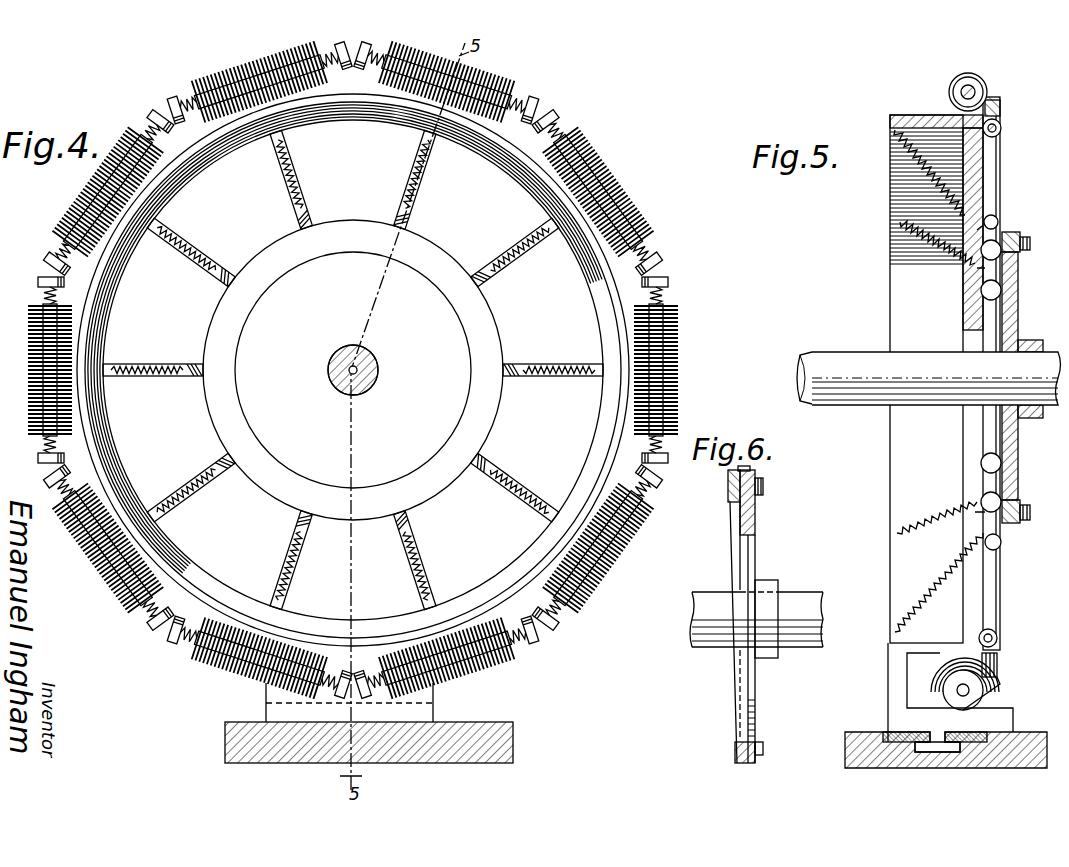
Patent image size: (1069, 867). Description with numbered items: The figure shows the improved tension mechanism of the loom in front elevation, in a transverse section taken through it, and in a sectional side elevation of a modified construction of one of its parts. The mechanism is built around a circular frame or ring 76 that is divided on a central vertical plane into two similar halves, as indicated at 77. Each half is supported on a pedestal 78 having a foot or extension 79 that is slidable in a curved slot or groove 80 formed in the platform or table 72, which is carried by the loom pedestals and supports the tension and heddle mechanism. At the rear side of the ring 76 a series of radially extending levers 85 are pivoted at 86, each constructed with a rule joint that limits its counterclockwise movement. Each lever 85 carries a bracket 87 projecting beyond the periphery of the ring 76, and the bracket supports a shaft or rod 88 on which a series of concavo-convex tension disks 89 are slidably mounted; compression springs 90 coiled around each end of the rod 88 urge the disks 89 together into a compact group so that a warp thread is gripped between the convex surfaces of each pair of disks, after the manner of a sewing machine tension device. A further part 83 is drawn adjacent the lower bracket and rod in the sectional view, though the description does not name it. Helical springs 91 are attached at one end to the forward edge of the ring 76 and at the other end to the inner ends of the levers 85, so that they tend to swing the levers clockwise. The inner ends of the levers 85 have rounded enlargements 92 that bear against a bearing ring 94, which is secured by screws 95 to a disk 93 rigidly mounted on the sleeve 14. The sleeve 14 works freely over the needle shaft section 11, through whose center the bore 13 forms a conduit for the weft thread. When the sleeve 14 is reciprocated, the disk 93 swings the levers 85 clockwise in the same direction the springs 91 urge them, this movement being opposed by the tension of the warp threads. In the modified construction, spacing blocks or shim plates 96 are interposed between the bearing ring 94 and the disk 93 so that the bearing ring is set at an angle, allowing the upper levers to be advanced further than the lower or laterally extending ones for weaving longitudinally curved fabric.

In FIG. 4, the needle shaft section 11 is at (374, 372).
In FIG. 5, the needle shaft section 11 is at (797, 367).
In FIG. 4, the bore 13 is at (336, 380).
In FIG. 4, the sleeve 14 is at (368, 356).
In FIG. 5, the sleeve 14 is at (842, 360).
In FIG. 6, the sleeve 14 is at (800, 601).
In FIG. 4, the platform 72 is at (433, 763).
In FIG. 5, the platform 72 is at (873, 766).
In FIG. 4, the circular frame or ring 76 is at (527, 172).
In FIG. 5, the circular frame or ring 76 is at (897, 275).
In FIG. 4, the division of ring sections 77 is at (353, 93).
In FIG. 4, the pedestal 78 is at (425, 693).
In FIG. 5, the pedestal 78 is at (890, 685).
In FIG. 5, the foot or extension 79 is at (940, 744).
In FIG. 5, the curved slot or groove 80 is at (927, 753).
In FIG. 5, the bracket 83 is at (960, 692).
In FIG. 4, the radially extending lever 85 is at (544, 238).
In FIG. 5, the radially extending lever 85 is at (998, 158).
In FIG. 5, the pivot 86 is at (1000, 127).
In FIG. 4, the bracket 87 is at (541, 106).
In FIG. 5, the bracket 87 is at (993, 98).
In FIG. 5, the shaft or rod 88 is at (953, 94).
In FIG. 4, the concavo-convex tension disks 89 is at (584, 178).
In FIG. 5, the concavo-convex tension disks 89 is at (970, 73).
In FIG. 4, the compression springs 90 is at (560, 133).
In FIG. 4, the helical springs 91 is at (491, 272).
In FIG. 5, the helical springs 91 is at (915, 212).
In FIG. 4, the rounded enlargements 92 is at (477, 363).
In FIG. 5, the rounded enlargements 92 is at (985, 290).
In FIG. 4, the disk 93 is at (353, 370).
In FIG. 5, the disk 93 is at (1020, 290).
In FIG. 6, the disk 93 is at (757, 514).
In FIG. 4, the bearing ring 94 is at (473, 401).
In FIG. 5, the bearing ring 94 is at (1009, 231).
In FIG. 6, the bearing ring 94 is at (728, 480).
In FIG. 5, the screws 95 is at (1023, 251).
In FIG. 6, the screws 95 is at (764, 483).
In FIG. 6, the spacing blocks or shim plates 96 is at (746, 471).